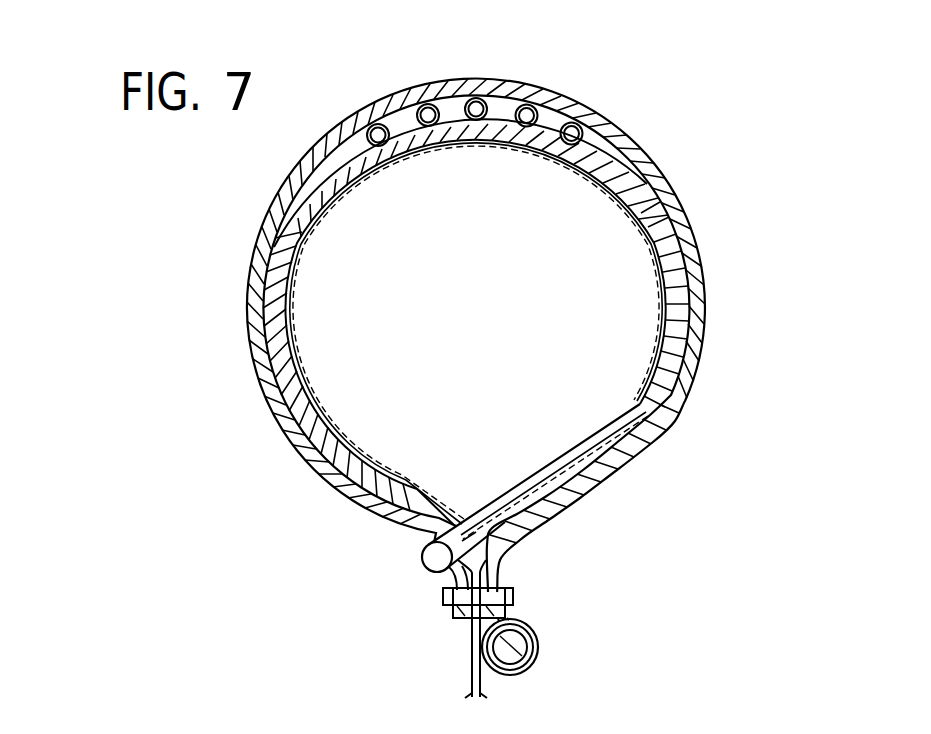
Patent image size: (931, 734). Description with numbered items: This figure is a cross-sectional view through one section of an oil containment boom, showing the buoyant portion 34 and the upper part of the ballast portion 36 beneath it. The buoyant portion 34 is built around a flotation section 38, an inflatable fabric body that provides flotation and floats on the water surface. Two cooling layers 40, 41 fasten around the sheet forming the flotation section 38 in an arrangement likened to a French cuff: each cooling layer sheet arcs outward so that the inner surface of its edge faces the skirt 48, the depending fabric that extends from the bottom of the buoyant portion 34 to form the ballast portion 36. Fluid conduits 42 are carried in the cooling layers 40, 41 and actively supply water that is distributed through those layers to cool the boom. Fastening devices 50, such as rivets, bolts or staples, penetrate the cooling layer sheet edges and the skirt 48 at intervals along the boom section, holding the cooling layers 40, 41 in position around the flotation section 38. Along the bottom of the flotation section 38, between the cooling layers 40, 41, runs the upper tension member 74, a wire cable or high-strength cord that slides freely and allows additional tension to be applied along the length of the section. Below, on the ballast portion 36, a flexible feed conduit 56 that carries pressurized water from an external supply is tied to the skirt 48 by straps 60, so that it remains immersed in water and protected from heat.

The buoyant portion 34 is at (186, 349).
The ballast portion 36 is at (380, 628).
The flotation sections 38 is at (487, 258).
The cooling layer 40 is at (667, 247).
The cooling layer 41 is at (652, 172).
The fluid conduit 42 is at (378, 123).
The skirt 48 is at (470, 676).
The fastening devices 50 is at (512, 597).
The feed conduit 56 is at (518, 653).
The straps 60 is at (528, 634).
The upper tension member 74 is at (422, 558).